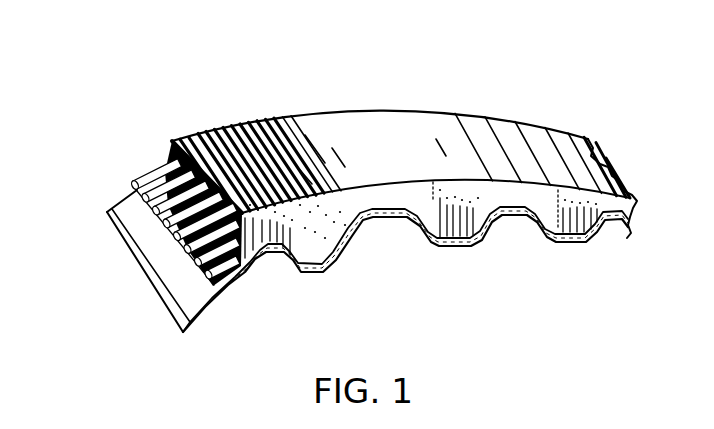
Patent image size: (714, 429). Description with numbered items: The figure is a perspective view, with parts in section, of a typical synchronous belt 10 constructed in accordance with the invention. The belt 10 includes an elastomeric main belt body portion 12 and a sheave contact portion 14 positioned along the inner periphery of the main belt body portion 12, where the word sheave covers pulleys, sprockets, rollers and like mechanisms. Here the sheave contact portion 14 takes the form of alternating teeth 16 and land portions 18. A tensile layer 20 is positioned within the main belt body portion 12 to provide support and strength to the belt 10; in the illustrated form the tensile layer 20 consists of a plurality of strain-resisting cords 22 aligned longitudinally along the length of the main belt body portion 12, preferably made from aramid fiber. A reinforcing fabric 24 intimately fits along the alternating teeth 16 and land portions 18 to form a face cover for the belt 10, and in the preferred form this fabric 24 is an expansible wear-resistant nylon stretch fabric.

The synchronous belt 10 is at (336, 171).
The main belt body portion 12 is at (370, 143).
The sheave contact portion 14 is at (320, 232).
The teeth 16 is at (333, 243).
The land portions 18 is at (387, 228).
The tensile layer 20 is at (138, 205).
The strain-resisting cords 22 is at (171, 225).
The reinforcing fabric 24 is at (532, 226).